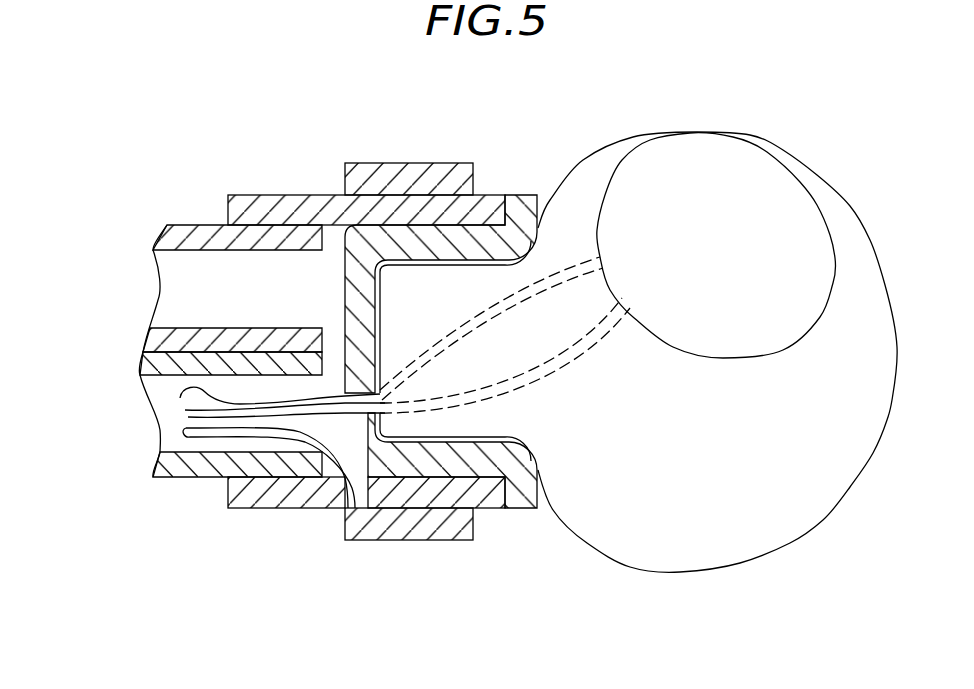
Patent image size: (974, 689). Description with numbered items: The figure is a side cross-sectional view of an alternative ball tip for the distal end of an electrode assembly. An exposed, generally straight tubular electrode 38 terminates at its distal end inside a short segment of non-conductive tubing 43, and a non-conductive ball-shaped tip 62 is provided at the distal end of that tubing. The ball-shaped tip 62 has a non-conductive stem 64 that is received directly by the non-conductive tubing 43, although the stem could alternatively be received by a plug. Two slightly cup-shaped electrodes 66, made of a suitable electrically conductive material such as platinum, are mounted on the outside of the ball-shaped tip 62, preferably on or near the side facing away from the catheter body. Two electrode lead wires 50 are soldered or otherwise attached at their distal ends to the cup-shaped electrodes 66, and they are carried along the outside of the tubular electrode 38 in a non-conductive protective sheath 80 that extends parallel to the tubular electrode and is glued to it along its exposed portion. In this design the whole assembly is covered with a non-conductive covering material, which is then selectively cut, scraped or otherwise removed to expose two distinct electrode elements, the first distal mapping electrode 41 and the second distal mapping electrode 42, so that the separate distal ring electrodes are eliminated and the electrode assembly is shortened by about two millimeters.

The tubular electrode 38 is at (193, 237).
The non-conductive tubing 43 is at (289, 207).
The first distal mapping electrode 41 is at (386, 173).
The non-conductive stem 64 is at (448, 418).
The electrode lead wires 50 is at (163, 413).
The protective sheath 80 is at (212, 477).
The second distal mapping electrode 42 is at (806, 267).
The cup-shaped electrodes 66 is at (705, 178).
The ball-shaped tip 62 is at (763, 508).